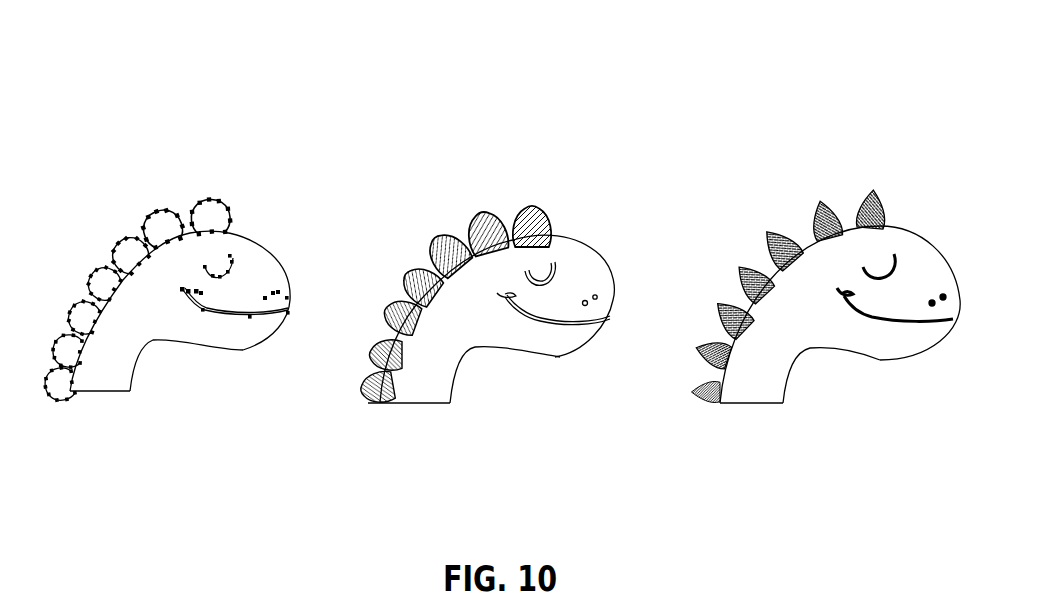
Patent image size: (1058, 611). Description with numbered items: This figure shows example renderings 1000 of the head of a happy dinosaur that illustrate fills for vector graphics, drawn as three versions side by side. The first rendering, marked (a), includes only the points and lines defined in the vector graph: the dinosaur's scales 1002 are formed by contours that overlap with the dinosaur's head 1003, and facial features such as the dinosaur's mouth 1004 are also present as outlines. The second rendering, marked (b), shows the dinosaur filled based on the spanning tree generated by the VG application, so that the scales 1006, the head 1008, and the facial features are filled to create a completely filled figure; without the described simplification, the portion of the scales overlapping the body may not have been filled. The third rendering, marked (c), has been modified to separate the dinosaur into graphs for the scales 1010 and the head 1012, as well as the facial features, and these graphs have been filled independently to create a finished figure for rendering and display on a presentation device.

The renderings 1000 is at (632, 78).
The scales 1002 is at (227, 217).
The head 1003 is at (243, 350).
The mouth 1004 is at (190, 300).
The scales 1006 is at (543, 212).
The head 1008 is at (550, 357).
The scales 1010 is at (892, 207).
The head 1012 is at (867, 357).